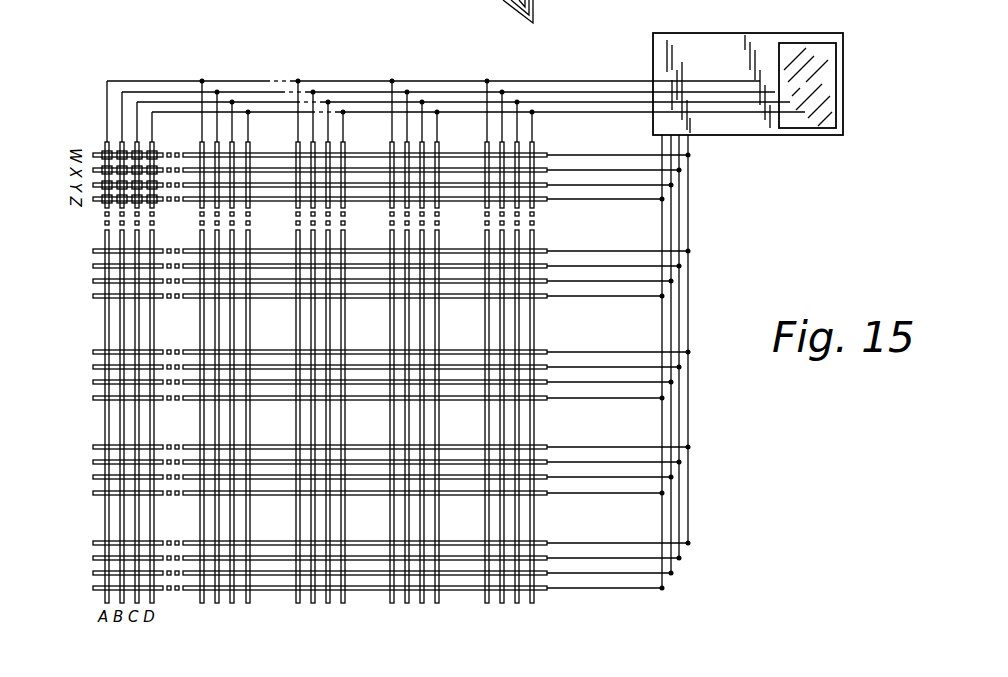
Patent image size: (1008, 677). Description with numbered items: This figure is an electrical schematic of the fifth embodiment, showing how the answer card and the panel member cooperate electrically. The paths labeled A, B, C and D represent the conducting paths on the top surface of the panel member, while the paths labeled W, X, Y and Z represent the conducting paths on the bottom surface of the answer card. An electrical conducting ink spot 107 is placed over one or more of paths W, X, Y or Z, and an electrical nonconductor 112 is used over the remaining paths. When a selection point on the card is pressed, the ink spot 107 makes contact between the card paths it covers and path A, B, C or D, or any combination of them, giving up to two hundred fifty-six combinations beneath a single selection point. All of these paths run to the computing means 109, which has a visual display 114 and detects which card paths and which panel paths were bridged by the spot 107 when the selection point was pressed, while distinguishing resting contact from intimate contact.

The electrical conducting ink spot 107 is at (105, 152).
The electrical nonconductor 112 is at (138, 207).
The computing means 109 is at (755, 33).
The visual display 114 is at (822, 70).